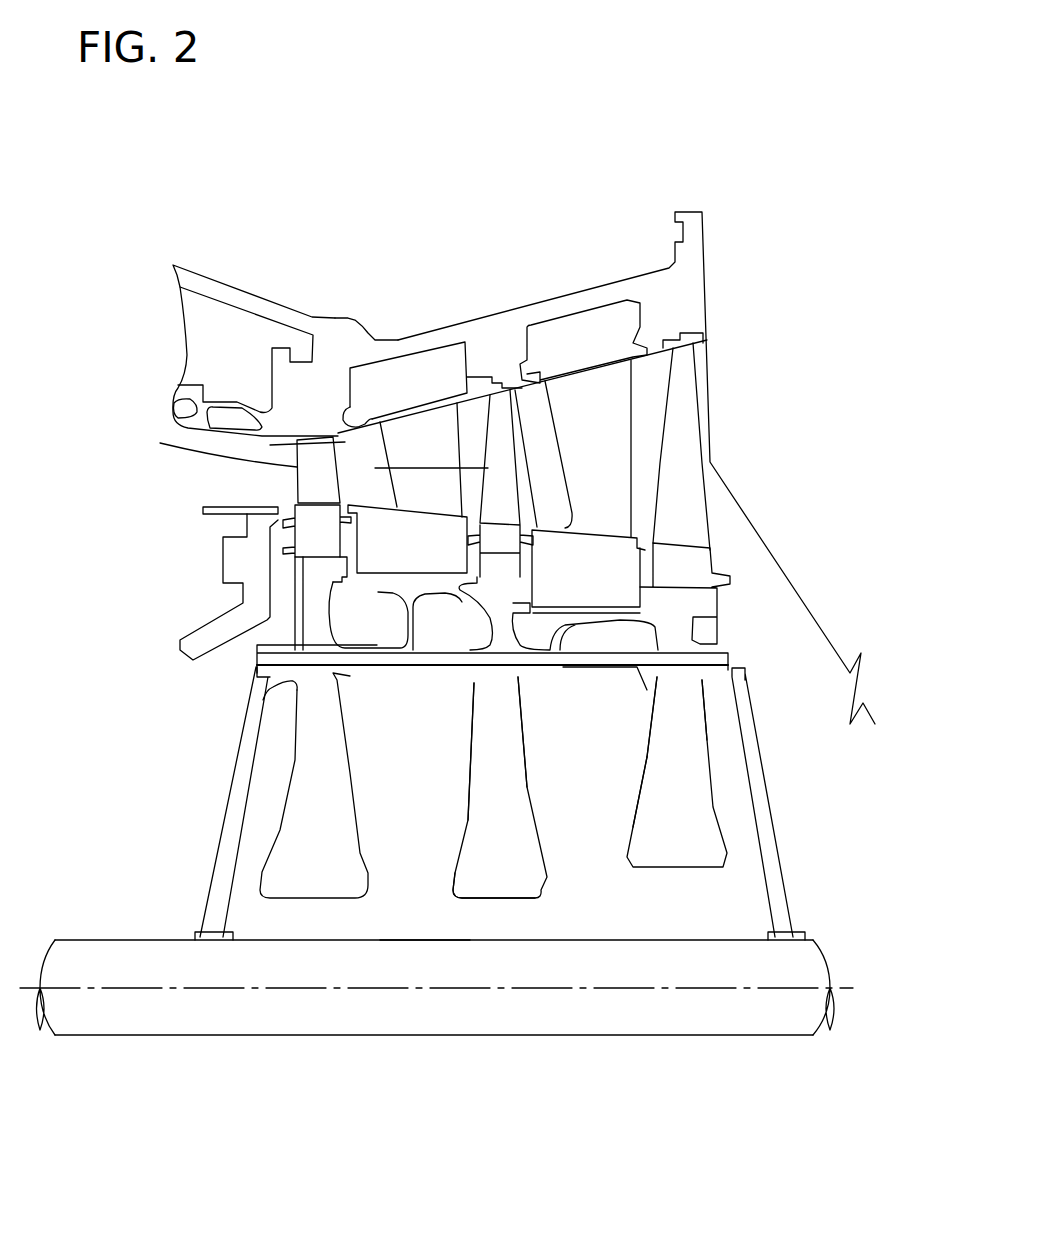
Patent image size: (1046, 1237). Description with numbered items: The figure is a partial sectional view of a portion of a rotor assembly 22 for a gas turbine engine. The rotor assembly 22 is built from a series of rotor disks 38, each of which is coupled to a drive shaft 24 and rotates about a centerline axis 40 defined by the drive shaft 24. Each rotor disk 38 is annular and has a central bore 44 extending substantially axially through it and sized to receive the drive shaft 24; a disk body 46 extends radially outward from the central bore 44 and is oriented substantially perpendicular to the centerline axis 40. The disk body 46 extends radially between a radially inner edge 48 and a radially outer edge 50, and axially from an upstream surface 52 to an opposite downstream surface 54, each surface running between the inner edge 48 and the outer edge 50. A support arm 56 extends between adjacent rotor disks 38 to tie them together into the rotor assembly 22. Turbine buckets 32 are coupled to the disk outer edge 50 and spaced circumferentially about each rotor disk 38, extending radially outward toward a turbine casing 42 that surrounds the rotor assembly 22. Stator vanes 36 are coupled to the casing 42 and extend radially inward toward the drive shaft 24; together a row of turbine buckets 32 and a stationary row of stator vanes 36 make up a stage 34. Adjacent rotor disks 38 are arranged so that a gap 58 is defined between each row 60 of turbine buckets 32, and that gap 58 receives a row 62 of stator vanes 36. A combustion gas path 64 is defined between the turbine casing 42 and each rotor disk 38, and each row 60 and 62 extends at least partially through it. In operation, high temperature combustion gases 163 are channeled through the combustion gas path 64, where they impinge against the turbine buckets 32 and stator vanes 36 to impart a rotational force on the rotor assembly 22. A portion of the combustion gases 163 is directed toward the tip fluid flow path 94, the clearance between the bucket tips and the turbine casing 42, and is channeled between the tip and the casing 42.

The rotor assembly 22 is at (732, 226).
The drive shaft 24 is at (422, 942).
The turbine bucket 32 is at (536, 410).
The stage 34 is at (414, 368).
The stator vane 36 is at (464, 416).
The rotor disk 38 is at (340, 738).
The centerline axis 40 is at (105, 985).
The turbine casing 42 is at (345, 322).
The central bore 44 is at (435, 898).
The disk body 46 is at (641, 795).
The radially inner edge 48 is at (522, 902).
The radially outer edge 50 is at (467, 626).
The upstream surface 52 is at (471, 803).
The downstream surface 54 is at (521, 724).
The support arm 56 is at (390, 596).
The gap 58 is at (652, 370).
The row of turbine buckets 60 is at (537, 445).
The row of stator vanes 62 is at (430, 388).
The combustion gas path 64 is at (455, 468).
The tip fluid flow path 94 is at (338, 442).
The combustion gases 163 is at (300, 467).